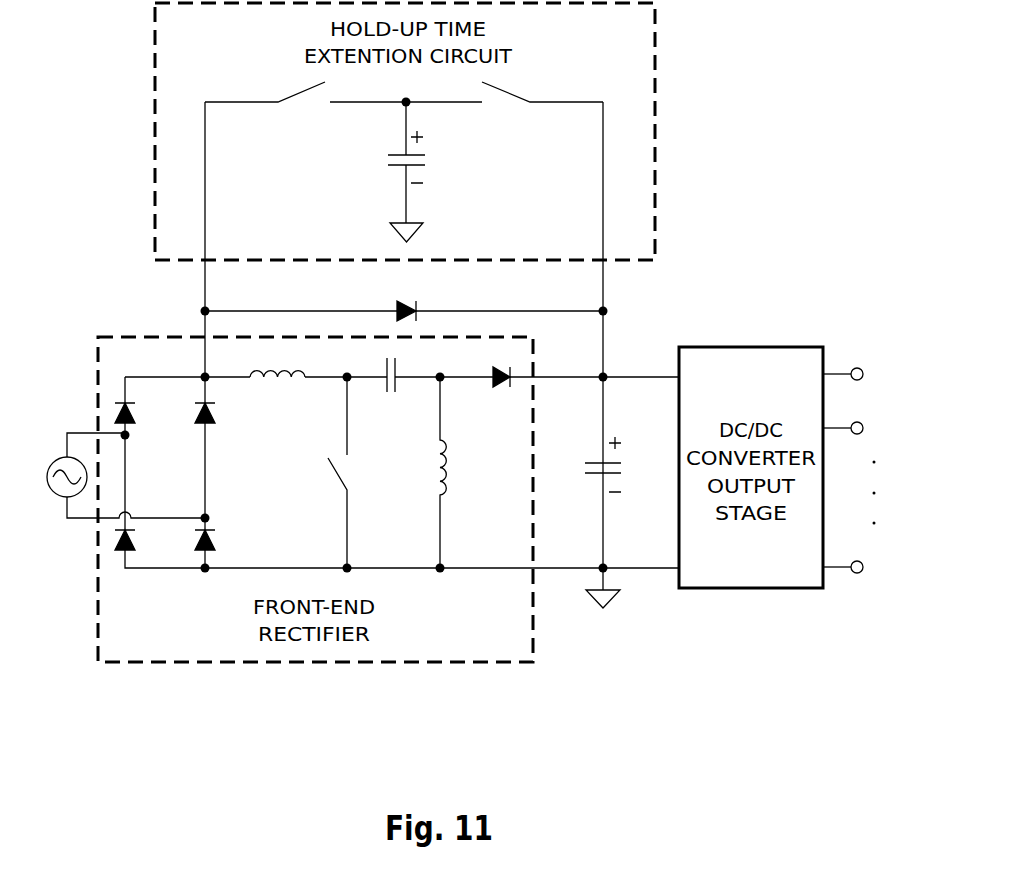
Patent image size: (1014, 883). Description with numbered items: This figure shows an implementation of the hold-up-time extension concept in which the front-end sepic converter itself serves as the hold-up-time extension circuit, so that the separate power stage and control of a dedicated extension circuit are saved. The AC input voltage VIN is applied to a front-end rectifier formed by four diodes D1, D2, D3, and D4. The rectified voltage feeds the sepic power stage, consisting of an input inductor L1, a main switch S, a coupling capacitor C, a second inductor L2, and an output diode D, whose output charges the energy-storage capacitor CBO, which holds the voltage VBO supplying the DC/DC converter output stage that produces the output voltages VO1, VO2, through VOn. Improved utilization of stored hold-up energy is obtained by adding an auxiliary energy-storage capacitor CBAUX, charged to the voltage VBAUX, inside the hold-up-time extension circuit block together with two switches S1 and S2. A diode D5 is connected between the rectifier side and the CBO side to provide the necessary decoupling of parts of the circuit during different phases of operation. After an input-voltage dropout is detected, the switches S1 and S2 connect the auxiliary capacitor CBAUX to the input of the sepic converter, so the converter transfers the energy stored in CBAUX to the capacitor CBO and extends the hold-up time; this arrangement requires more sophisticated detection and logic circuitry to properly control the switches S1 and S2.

The switch S1 is at (305, 110).
The switch S2 is at (504, 110).
The auxiliary energy-storage capacitor CBAUX is at (380, 162).
The auxiliary capacitor voltage VBAUX is at (446, 157).
The diode D5 is at (423, 298).
The input voltage VIN is at (111, 475).
The rectifier diode D1 is at (142, 418).
The rectifier diode D2 is at (142, 545).
The rectifier diode D3 is at (222, 418).
The rectifier diode D4 is at (222, 545).
The inductor L1 is at (277, 394).
The switch S is at (325, 472).
The capacitor C is at (392, 389).
The inductor L2 is at (424, 472).
The diode D is at (501, 393).
The energy-storage capacitor CBO is at (580, 472).
The energy-storage capacitor voltage VBO is at (638, 464).
The first output voltage VO1 is at (864, 380).
The second output voltage VO2 is at (864, 433).
The nth output voltage VOn is at (864, 573).